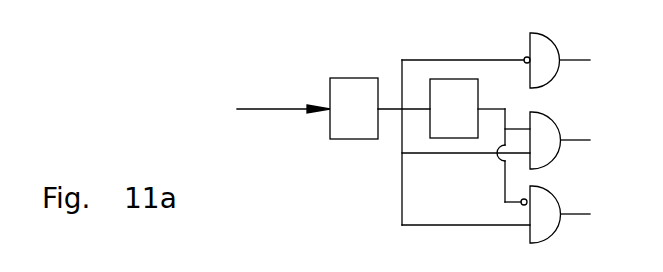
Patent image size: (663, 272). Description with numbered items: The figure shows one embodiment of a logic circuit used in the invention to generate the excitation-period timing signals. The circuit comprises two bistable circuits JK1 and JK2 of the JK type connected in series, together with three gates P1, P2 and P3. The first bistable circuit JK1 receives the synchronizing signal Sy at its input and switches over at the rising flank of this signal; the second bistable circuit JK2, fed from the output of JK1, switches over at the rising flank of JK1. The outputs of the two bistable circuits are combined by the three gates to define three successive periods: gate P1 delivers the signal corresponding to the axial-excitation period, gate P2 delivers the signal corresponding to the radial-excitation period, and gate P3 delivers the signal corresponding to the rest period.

The synchronizing signal Sy is at (283, 95).
The bistable circuit JK1 is at (354, 108).
The bistable circuit JK2 is at (454, 108).
The gate P3 is at (570, 54).
The gate P1 is at (572, 137).
The gate P2 is at (569, 211).